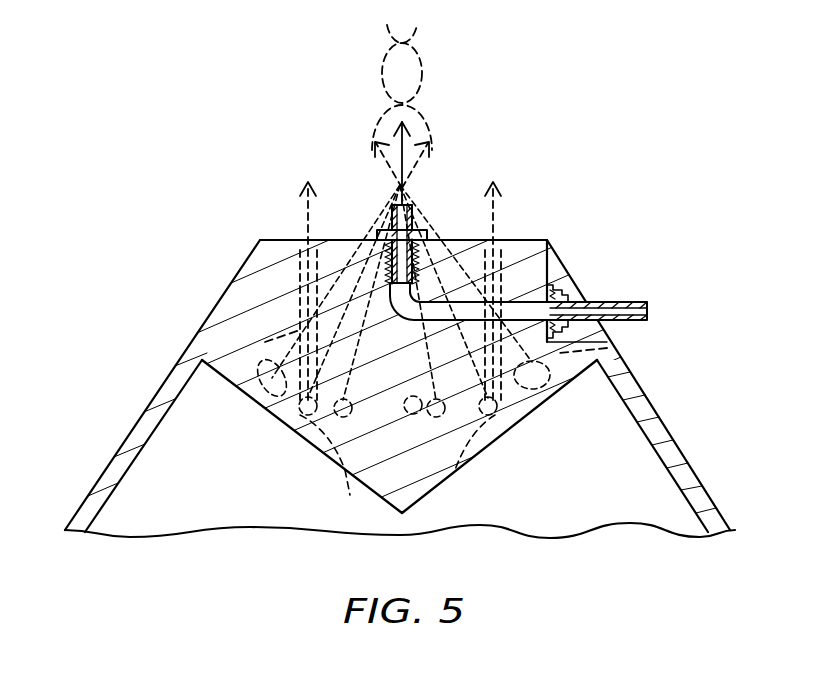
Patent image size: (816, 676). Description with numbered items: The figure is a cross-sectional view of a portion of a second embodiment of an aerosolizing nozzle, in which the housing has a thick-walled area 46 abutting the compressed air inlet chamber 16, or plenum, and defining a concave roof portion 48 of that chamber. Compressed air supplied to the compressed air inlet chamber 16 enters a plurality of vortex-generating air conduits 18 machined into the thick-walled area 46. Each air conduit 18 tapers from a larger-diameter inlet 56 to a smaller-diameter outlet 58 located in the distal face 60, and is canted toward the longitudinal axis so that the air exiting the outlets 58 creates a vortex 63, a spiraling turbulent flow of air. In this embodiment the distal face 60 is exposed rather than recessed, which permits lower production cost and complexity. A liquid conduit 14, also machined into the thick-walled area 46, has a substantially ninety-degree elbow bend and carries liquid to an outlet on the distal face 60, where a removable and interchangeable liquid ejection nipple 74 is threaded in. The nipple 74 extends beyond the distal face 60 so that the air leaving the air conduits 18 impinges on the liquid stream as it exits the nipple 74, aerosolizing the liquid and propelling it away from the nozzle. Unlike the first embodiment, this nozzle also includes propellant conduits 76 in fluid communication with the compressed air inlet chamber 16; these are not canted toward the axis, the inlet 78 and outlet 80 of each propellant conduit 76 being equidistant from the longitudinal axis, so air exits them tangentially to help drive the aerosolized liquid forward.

The liquid conduit 14 is at (524, 313).
The compressed air inlet chamber 16 is at (578, 502).
The vortex-generating air conduits 18 is at (265, 342).
The thick-walled area 46 is at (252, 286).
The concave roof portion 48 is at (252, 378).
The inlet 56 is at (258, 392).
The outlet 58 is at (439, 240).
The distal face 60 is at (526, 238).
The vortex 63 is at (383, 63).
The liquid ejection nipple 74 is at (392, 217).
The propellant conduits 76 is at (320, 440).
The inlet 78 is at (346, 485).
The outlet 80 is at (303, 238).